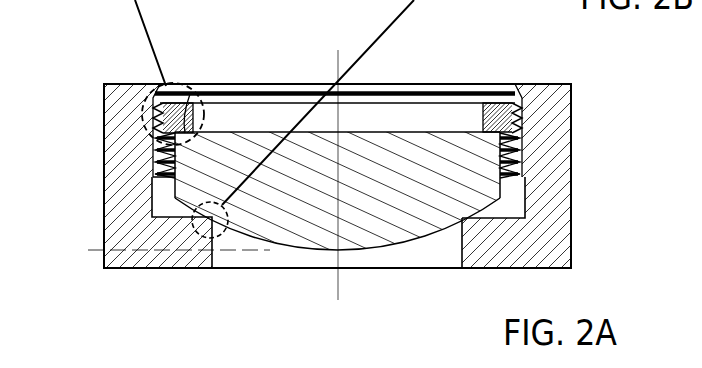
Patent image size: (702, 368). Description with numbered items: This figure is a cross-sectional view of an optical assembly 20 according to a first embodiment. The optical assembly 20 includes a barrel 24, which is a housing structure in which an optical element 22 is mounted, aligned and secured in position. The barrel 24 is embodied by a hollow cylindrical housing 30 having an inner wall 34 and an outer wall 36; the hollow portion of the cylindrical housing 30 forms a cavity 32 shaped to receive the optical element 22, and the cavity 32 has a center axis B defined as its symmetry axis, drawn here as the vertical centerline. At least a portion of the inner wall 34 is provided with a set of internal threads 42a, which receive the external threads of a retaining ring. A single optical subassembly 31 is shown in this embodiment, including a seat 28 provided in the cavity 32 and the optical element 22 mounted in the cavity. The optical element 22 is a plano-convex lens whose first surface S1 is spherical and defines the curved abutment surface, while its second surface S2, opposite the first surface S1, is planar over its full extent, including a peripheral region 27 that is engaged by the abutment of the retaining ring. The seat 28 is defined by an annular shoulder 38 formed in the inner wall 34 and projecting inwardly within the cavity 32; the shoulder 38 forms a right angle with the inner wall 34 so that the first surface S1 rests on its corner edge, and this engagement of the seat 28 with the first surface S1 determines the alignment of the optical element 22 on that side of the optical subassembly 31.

The optical assembly 20 is at (480, 58).
The optical element 22 is at (407, 230).
The barrel 24 is at (572, 97).
The peripheral region 27 is at (190, 92).
The seat 28 is at (453, 238).
The hollow cylindrical housing 30 is at (563, 158).
The optical subassembly 31 is at (77, 103).
The cavity 32 is at (287, 258).
The inner wall 34 is at (503, 197).
The outer wall 36 is at (572, 248).
The annular shoulder 38 is at (205, 228).
The internal threads 42a is at (530, 103).
The center axis B is at (337, 62).
The first surface S1 is at (357, 253).
The second surface S2 is at (408, 132).